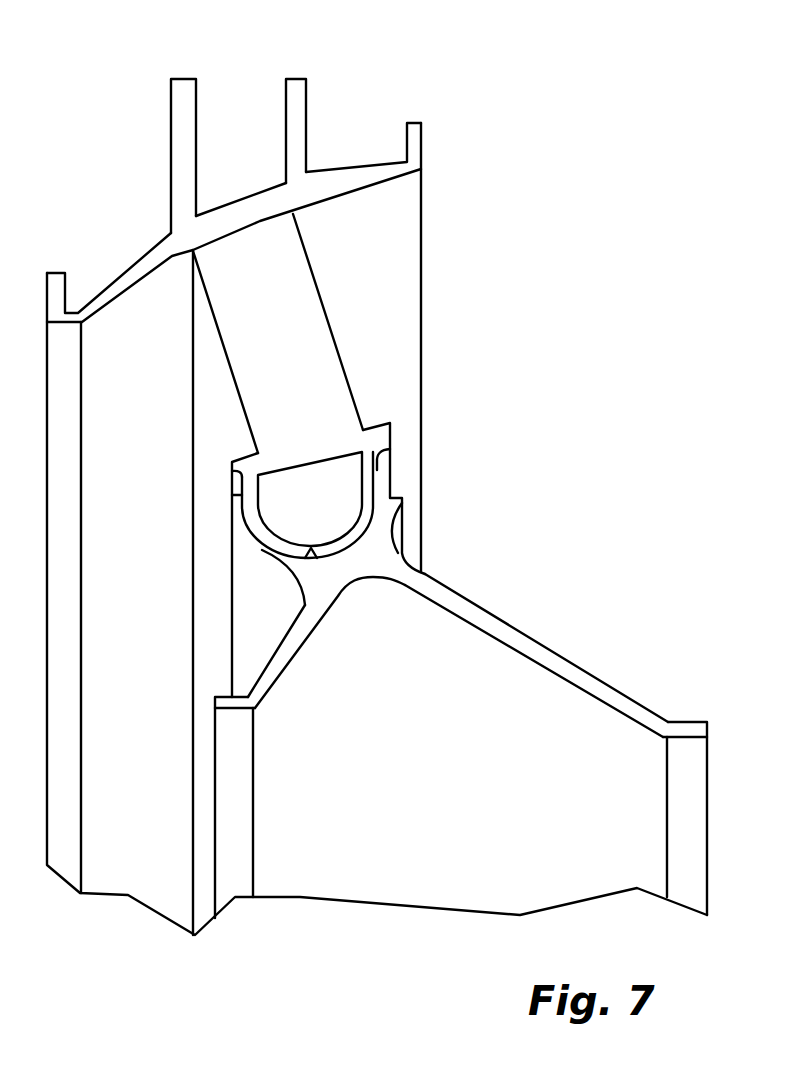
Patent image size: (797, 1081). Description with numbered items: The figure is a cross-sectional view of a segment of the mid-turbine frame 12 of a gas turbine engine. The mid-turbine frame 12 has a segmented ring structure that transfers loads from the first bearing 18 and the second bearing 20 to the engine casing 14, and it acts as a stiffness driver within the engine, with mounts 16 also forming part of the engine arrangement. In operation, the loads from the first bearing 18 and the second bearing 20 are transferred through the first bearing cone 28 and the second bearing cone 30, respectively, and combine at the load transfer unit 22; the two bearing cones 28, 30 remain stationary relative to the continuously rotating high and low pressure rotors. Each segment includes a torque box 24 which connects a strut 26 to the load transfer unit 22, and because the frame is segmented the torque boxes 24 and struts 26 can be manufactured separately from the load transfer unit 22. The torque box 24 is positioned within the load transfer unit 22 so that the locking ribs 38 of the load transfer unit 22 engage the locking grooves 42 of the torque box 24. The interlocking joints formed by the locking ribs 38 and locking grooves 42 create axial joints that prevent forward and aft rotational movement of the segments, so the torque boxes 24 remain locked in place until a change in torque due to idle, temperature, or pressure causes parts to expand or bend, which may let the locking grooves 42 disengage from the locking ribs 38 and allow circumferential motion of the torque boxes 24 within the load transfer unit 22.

The mid-turbine frame 12 is at (512, 431).
The engine casing 14 is at (350, 165).
The mounts 16 is at (188, 103).
The first bearing 18 is at (227, 710).
The second bearing 20 is at (693, 732).
The load transfer unit 22 is at (377, 535).
The torque box 24 is at (385, 478).
The strut 26 is at (326, 315).
The first bearing cone 28 is at (293, 640).
The second bearing cone 30 is at (503, 635).
The locking rib 38 is at (309, 568).
The locking groove 42 is at (292, 547).